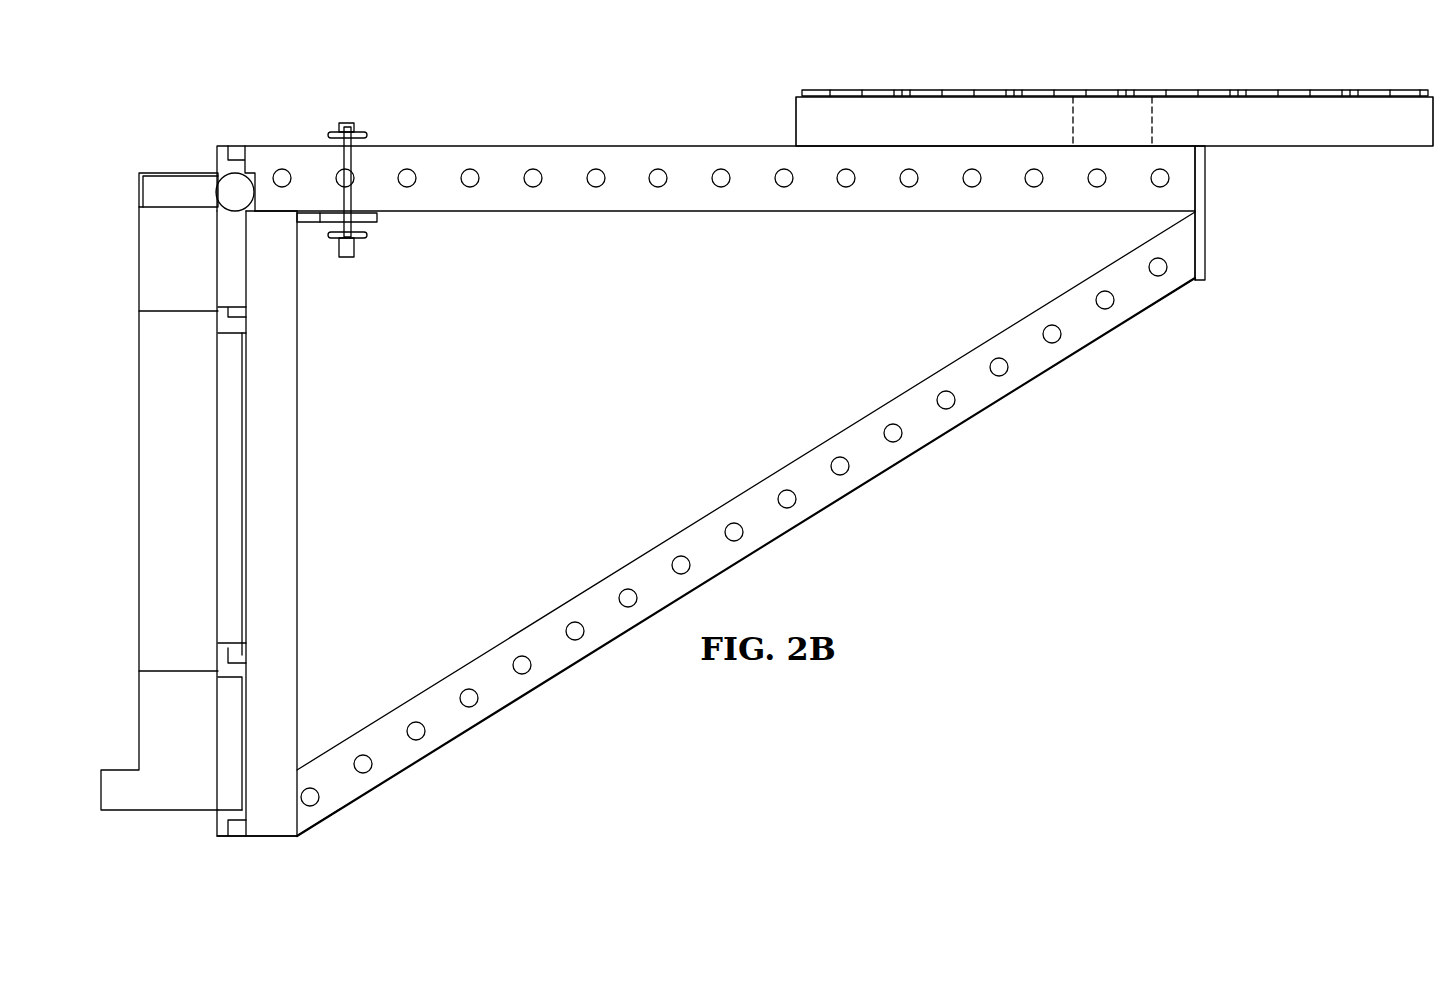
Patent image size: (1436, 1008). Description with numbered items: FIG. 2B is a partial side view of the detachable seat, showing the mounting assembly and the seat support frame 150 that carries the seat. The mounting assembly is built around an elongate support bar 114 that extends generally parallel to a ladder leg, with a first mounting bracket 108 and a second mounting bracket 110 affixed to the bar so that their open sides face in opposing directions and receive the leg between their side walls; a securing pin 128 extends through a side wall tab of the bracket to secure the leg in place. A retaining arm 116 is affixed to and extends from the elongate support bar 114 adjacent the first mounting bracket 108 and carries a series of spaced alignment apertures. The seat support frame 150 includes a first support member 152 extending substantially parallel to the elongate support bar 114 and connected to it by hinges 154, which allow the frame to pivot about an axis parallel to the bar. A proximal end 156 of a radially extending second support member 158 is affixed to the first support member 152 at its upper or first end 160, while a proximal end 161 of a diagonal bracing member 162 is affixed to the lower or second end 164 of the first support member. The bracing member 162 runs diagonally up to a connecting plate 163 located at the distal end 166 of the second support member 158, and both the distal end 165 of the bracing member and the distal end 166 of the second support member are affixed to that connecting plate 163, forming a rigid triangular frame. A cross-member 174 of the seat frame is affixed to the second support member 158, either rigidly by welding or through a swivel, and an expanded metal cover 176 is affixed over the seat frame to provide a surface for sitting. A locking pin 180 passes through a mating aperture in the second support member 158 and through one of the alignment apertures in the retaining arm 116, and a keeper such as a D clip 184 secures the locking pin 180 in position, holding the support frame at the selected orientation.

The first mounting bracket 108 is at (148, 253).
The mounting bracket 110 is at (172, 800).
The elongate support bar 114 is at (148, 473).
The retaining arm 116 is at (380, 215).
The securing pin 128 is at (222, 188).
The seat support frame 150 is at (569, 118).
The first support member 152 is at (300, 432).
The hinge 154 is at (248, 292).
The proximal end of second support member 156 is at (275, 145).
The second support member 158 is at (611, 203).
The first end of first support member 160 is at (288, 230).
The proximal end of bracing member 161 is at (333, 810).
The bracing member 162 is at (532, 682).
The connecting plate 163 is at (1207, 215).
The second end of first support member 164 is at (270, 842).
The distal end of bracing member 165 is at (1188, 272).
The distal end of second support member 166 is at (1188, 184).
The cross-member 174 is at (1066, 102).
The expanded metal cover 176 is at (1258, 92).
The locking pin 180 is at (347, 126).
The D clip 184 is at (366, 237).